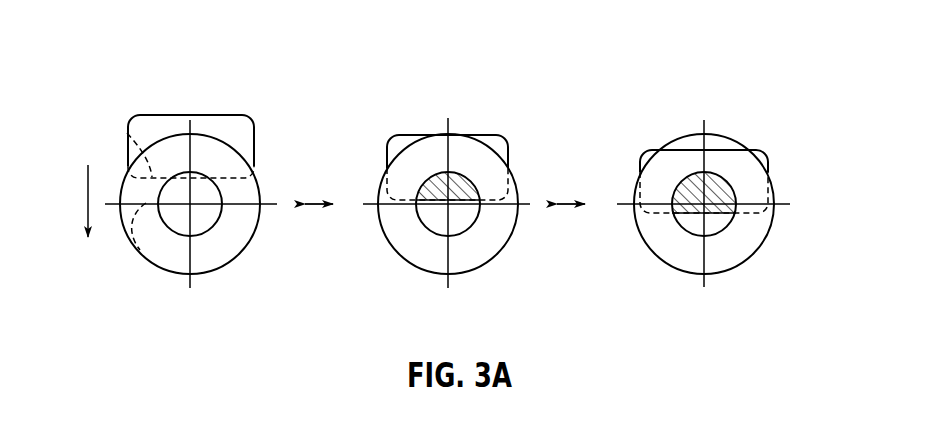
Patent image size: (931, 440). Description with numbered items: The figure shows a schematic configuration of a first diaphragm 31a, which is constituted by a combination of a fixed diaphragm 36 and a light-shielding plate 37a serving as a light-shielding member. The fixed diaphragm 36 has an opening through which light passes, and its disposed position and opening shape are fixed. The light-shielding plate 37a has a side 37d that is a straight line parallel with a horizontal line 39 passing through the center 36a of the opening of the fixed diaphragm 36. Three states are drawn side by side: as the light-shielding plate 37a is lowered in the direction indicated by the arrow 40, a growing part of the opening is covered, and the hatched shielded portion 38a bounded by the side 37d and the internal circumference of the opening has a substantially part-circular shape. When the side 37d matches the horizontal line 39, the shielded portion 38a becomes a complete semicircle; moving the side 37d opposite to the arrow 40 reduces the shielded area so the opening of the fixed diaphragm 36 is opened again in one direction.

The diaphragm 31a is at (215, 165).
The fixed diaphragm 36 is at (233, 232).
The center 36a is at (190, 205).
The light-shielding plate 37a is at (212, 128).
The side 37d is at (127, 133).
The shielded portion 38a is at (727, 183).
The horizontal line 39 is at (140, 255).
The arrow 40 is at (87, 200).